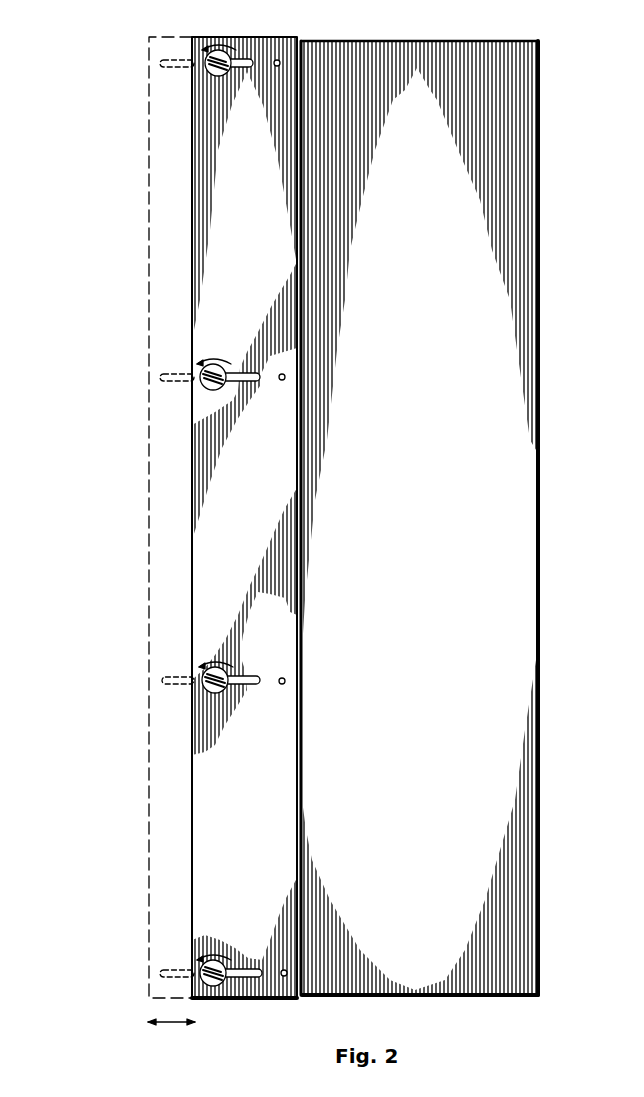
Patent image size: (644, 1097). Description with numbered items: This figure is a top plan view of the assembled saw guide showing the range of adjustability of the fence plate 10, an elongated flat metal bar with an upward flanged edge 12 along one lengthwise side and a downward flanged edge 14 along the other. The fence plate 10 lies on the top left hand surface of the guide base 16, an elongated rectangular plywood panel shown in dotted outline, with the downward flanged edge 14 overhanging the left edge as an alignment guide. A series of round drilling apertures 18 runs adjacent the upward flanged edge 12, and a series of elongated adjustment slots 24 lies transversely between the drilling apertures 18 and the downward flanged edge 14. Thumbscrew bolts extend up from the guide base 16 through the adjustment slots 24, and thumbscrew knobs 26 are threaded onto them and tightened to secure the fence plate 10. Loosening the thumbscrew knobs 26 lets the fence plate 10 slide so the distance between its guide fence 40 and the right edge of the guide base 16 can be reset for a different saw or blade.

The fence plate 10 is at (213, 242).
The upward flanged edge 12 is at (300, 500).
The downward flanged edge 14 is at (149, 612).
The guide base 16 is at (505, 450).
The drilling apertures 18 is at (280, 60).
The adjustment slots 24 is at (246, 58).
The thumbscrew knobs 26 is at (210, 70).
The guide fence 40 is at (300, 788).